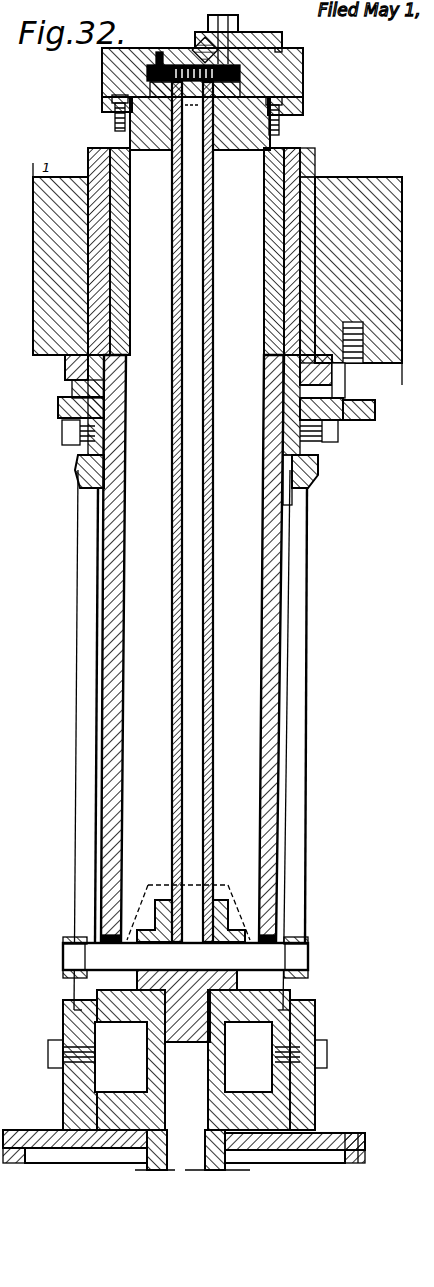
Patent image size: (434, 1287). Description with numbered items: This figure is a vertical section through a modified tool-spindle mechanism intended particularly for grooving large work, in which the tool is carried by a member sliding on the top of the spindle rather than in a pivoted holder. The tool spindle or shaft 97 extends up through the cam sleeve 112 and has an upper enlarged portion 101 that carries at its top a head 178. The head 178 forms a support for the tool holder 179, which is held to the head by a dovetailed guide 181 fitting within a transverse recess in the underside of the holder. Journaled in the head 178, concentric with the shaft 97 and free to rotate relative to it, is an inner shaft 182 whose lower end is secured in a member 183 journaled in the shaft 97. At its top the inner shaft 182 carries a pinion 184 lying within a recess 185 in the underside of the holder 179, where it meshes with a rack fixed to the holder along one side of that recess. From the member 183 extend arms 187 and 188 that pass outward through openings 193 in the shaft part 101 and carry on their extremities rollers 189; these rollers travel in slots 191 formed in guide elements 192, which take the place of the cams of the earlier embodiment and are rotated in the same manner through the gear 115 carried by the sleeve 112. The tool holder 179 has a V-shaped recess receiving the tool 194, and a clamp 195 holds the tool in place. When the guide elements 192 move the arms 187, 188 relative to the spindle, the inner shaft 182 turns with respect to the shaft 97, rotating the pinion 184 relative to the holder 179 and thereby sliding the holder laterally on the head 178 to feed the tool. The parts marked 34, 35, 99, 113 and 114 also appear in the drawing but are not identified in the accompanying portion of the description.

The axis centerline 34 is at (102, 68).
The bolts 35 is at (63, 939).
The tool spindle 97 is at (225, 1072).
The sleeve 99 is at (100, 285).
The upper enlarged portion 101 is at (113, 125).
The cam sleeve 112 is at (78, 462).
The recess 113 is at (98, 1035).
The nut 114 is at (58, 404).
The gear 115 is at (315, 1135).
The head 178 is at (150, 150).
The tool holder 179 is at (301, 52).
The dovetailed guide 181 is at (108, 90).
The inner shaft 182 is at (200, 212).
The member 183 is at (155, 930).
The pinion 184 is at (240, 80).
The recess 185 is at (178, 62).
The arm 187 is at (185, 956).
The arm 188 is at (248, 959).
The rollers 189 is at (80, 980).
The slots 191 is at (85, 644).
The guide elements 192 is at (74, 753).
The openings 193 is at (105, 925).
The tool 194 is at (198, 46).
The clamp 195 is at (272, 46).